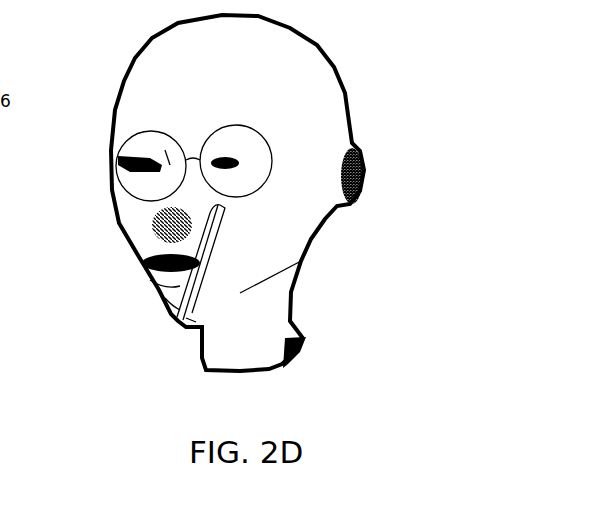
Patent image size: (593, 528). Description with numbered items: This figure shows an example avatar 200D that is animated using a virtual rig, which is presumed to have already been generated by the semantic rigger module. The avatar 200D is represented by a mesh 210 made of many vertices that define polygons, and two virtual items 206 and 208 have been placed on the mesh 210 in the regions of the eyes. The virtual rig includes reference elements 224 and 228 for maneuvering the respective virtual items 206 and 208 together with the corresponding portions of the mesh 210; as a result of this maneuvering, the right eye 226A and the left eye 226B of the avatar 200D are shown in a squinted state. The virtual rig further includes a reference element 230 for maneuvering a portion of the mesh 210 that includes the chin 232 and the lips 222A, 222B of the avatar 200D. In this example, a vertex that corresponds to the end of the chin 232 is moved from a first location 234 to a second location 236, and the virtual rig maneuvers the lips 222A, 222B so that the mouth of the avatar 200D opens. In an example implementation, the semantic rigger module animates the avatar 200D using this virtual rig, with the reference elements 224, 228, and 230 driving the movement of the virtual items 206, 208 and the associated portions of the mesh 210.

The avatar 200D is at (366, 55).
The virtual item 206 is at (122, 145).
The virtual item 208 is at (238, 161).
The mesh 210 is at (260, 374).
The lip 222A is at (148, 248).
The lip 222B is at (158, 284).
The reference element 224 is at (163, 157).
The right eye 226A is at (122, 171).
The left eye 226B is at (233, 163).
The reference element 228 is at (237, 165).
The reference element 230 is at (222, 210).
The chin 232 is at (208, 308).
The first location 234 is at (168, 302).
The second location 236 is at (190, 317).